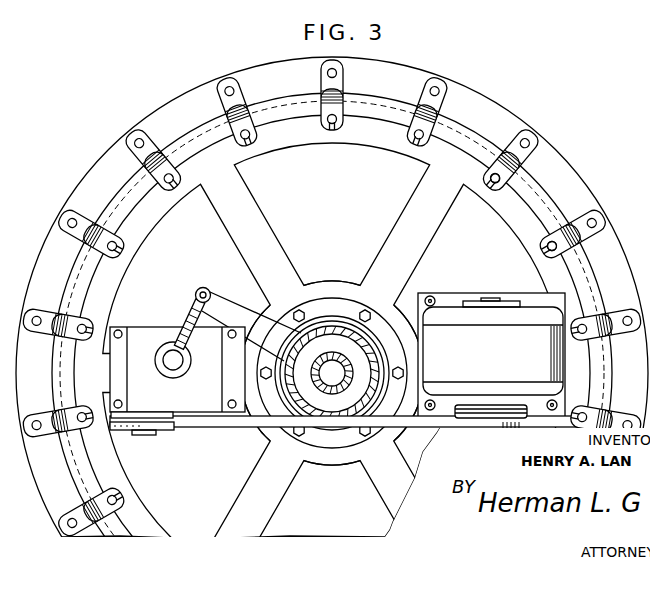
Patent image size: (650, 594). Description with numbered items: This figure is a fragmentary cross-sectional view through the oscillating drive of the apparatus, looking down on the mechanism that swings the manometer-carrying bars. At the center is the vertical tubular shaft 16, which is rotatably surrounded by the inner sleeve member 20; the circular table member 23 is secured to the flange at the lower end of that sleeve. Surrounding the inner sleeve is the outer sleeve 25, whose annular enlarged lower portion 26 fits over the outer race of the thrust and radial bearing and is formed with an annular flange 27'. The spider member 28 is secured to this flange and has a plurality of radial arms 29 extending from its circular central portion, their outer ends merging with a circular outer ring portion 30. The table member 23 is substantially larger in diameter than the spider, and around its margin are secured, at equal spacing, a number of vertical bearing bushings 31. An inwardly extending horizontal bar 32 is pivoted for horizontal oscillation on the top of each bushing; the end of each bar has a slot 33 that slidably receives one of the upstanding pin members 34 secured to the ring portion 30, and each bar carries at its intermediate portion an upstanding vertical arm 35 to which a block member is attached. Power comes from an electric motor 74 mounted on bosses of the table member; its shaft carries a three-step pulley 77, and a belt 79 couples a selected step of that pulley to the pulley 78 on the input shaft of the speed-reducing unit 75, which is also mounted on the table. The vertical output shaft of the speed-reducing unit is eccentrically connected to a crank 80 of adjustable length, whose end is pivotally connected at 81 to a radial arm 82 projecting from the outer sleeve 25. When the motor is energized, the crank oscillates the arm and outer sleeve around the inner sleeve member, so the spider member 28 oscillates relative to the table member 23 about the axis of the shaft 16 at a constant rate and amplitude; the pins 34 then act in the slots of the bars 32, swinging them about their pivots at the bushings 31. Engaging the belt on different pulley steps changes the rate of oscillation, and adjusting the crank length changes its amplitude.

The tubular shaft 16 is at (332, 373).
The sleeve member 20 is at (353, 307).
The table member 23 is at (583, 175).
The outer sleeve 25 is at (310, 307).
The annular enlarged lower portion 26 is at (277, 383).
The annular flange 27' is at (359, 373).
The spider member 28 is at (322, 292).
The radial arms 29 is at (397, 245).
The circular outer ring portion 30 is at (291, 129).
The bearing bushings 31 is at (533, 139).
The horizontal bar 32 is at (507, 172).
The slot 33 is at (494, 181).
The pin members 34 is at (549, 247).
The vertical arm 35 is at (511, 162).
The electric motor 74 is at (445, 318).
The speed-reducing unit 75 is at (141, 343).
The three-step pulley 77 is at (486, 412).
The pulley 78 is at (168, 431).
The belt 79 is at (218, 428).
The crank 80 is at (186, 325).
The pivotal connection 81 is at (204, 287).
The radial arm 82 is at (260, 311).